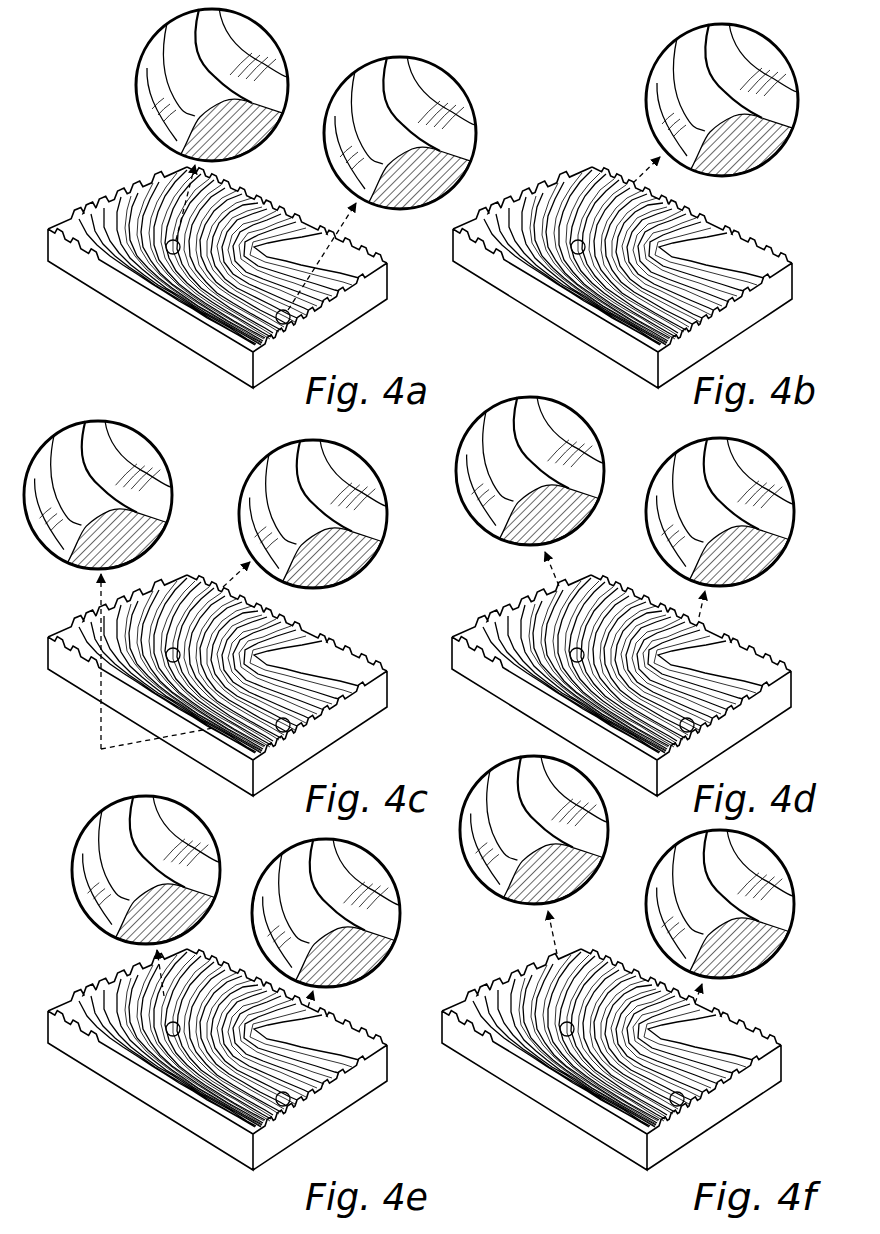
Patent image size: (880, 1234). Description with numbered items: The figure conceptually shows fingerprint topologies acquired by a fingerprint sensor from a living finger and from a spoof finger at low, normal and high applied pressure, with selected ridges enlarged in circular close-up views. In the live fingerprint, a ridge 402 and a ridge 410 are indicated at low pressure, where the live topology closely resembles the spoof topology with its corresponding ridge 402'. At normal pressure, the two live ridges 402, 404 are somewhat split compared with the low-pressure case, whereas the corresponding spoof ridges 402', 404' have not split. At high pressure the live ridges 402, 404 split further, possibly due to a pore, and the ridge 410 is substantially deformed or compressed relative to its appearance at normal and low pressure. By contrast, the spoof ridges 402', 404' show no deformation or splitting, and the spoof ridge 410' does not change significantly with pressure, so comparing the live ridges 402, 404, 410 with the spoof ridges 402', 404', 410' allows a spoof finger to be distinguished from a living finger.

In FIG. 4A, the ridge 402 is at (218, 102).
In FIG. 4C, the ridge 402 is at (291, 513).
In FIG. 4E, the ridge 402 is at (133, 868).
In FIG. 4A, the ridge 404 is at (217, 277).
In FIG. 4C, the ridge 404 is at (217, 685).
In FIG. 4E, the ridge 404 is at (217, 1060).
In FIG. 4A, the ridge 410 is at (400, 179).
In FIG. 4C, the ridge 410 is at (157, 594).
In FIG. 4E, the ridge 410 is at (349, 912).
In FIG. 4B, the ridge 402' is at (684, 99).
In FIG. 4D, the ridge 402' is at (530, 443).
In FIG. 4F, the ridge 402' is at (501, 818).
In FIG. 4D, the ridge 404' is at (621, 685).
In FIG. 4F, the ridge 404' is at (611, 1060).
In FIG. 4D, the ridge 410' is at (701, 535).
In FIG. 4F, the ridge 410' is at (659, 1020).